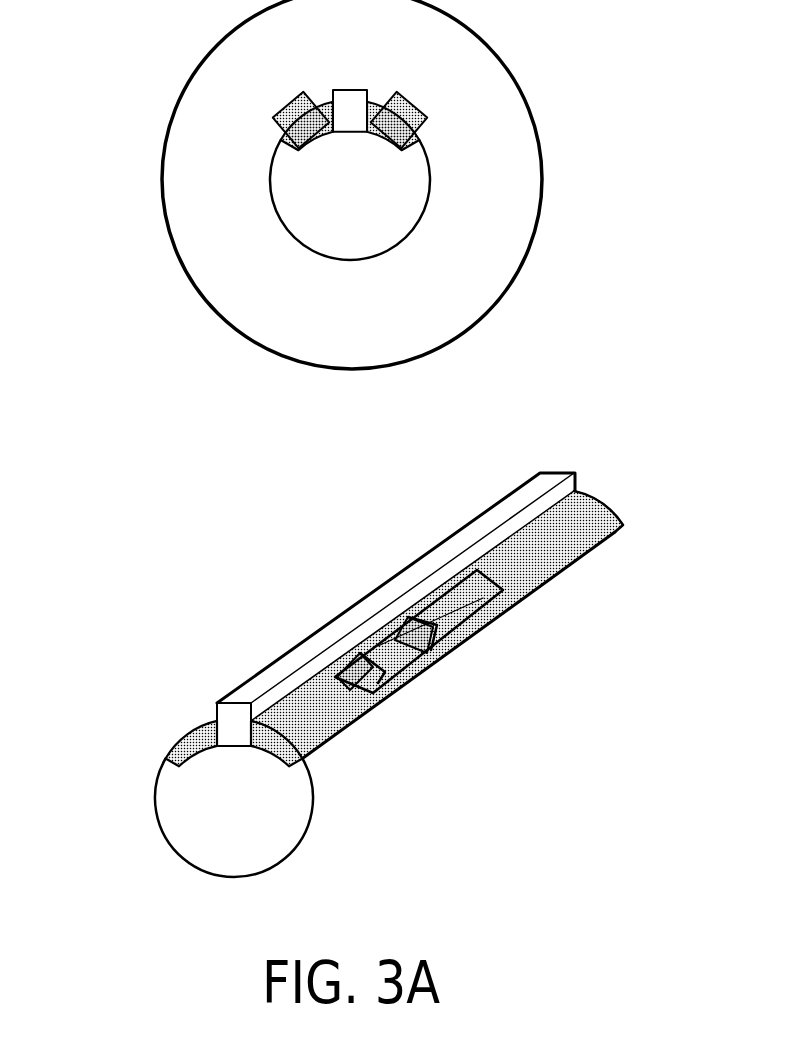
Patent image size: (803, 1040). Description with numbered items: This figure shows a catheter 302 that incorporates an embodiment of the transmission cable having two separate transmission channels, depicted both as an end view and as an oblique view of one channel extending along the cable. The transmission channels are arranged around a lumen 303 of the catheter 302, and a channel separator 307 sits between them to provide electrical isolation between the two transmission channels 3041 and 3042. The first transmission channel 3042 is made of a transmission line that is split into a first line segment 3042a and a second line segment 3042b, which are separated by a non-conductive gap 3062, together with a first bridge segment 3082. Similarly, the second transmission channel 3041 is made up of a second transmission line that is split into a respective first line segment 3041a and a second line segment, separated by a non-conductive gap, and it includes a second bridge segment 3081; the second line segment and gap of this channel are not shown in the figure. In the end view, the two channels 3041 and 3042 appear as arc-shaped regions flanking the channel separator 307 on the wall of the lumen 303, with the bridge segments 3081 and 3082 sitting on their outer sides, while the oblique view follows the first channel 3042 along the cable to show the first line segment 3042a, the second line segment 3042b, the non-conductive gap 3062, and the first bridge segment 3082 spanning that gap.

The catheter 302 is at (178, 201).
The lumen 303 is at (372, 203).
The channel separator 307 is at (348, 98).
The second transmission channel 3041 is at (290, 148).
The first transmission channel 3042 is at (410, 148).
The first line segment 3041a is at (193, 738).
The first line segment 3042a is at (320, 723).
The second line segment 3042b is at (568, 545).
The second bridge segment 3081 is at (292, 98).
The first bridge segment 3082 is at (408, 98).
The non-conductive gap 3062 is at (410, 663).